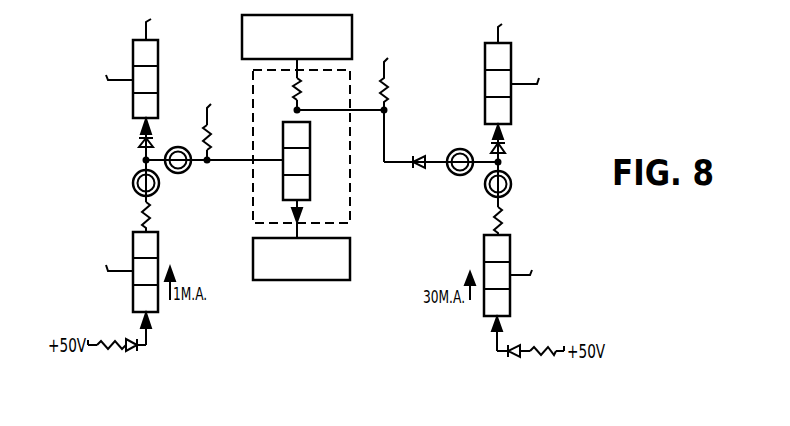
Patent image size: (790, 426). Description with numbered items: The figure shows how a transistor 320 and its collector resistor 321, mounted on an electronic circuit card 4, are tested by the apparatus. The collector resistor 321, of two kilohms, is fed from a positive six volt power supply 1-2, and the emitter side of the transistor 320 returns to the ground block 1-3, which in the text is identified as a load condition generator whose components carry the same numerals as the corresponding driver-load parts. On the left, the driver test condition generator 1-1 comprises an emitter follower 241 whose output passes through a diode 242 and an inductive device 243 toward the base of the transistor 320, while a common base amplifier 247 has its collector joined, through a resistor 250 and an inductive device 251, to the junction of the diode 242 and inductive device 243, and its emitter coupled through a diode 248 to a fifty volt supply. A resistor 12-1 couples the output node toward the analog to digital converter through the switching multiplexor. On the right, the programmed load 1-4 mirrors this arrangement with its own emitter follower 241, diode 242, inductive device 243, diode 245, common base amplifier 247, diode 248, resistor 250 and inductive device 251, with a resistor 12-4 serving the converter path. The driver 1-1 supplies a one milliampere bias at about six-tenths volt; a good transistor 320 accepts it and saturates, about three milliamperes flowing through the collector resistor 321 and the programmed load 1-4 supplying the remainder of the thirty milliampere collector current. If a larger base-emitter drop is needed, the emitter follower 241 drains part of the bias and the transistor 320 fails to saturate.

The test condition generator 1-1 is at (101, 61).
The power supply (+6V) 1-2 is at (353, 26).
The load condition generator 1-3 is at (297, 281).
The programmed load 1-4 is at (520, 47).
The electronic circuit card 4 is at (253, 95).
The resistor 12-1 is at (211, 135).
The resistor 12-4 is at (393, 93).
The emitter follower 241 is at (159, 56).
The diode 242 is at (138, 141).
The inductive device 243 is at (184, 146).
The diode 245 is at (425, 157).
The common base amplifier 247 is at (159, 256).
The diode 248 is at (130, 353).
The resistor 250 is at (150, 208).
The inductive device 251 is at (133, 180).
The transistor 320 is at (311, 150).
The collector resistor 321 is at (292, 89).